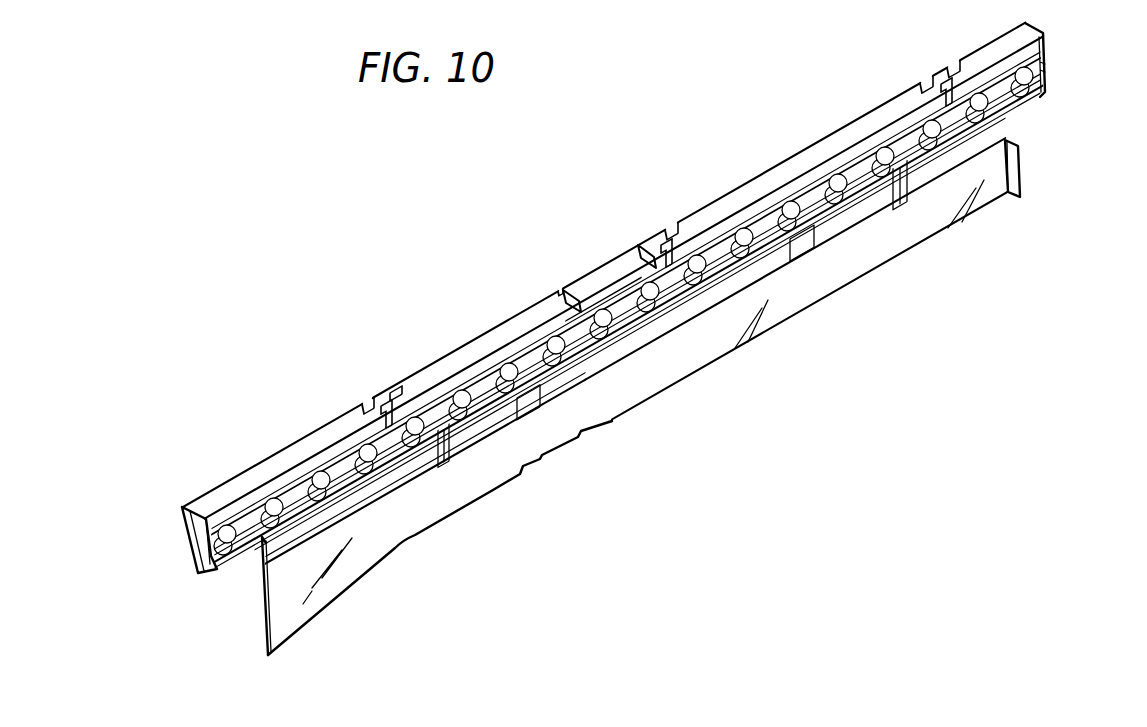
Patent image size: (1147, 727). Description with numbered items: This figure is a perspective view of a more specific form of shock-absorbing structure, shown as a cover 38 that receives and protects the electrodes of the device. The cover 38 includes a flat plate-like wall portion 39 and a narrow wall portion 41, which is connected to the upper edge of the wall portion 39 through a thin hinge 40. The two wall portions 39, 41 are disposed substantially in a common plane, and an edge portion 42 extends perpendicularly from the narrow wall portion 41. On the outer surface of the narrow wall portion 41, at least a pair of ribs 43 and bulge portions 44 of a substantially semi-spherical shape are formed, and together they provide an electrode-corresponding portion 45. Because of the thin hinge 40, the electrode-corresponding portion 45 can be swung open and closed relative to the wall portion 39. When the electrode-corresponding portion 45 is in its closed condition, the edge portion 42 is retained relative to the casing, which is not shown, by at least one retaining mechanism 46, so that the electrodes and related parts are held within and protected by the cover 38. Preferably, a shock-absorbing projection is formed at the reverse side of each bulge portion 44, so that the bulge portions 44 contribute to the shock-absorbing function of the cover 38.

The cover 38 is at (570, 266).
The wall portion 39 is at (669, 373).
The thin hinge 40 is at (258, 560).
The narrow wall portion 41 is at (198, 541).
The edge portion 42 is at (469, 357).
The ribs 43 is at (501, 399).
The bulge portions 44 is at (563, 357).
The electrode-corresponding portion 45 is at (1050, 76).
The retaining mechanism 46 is at (375, 401).